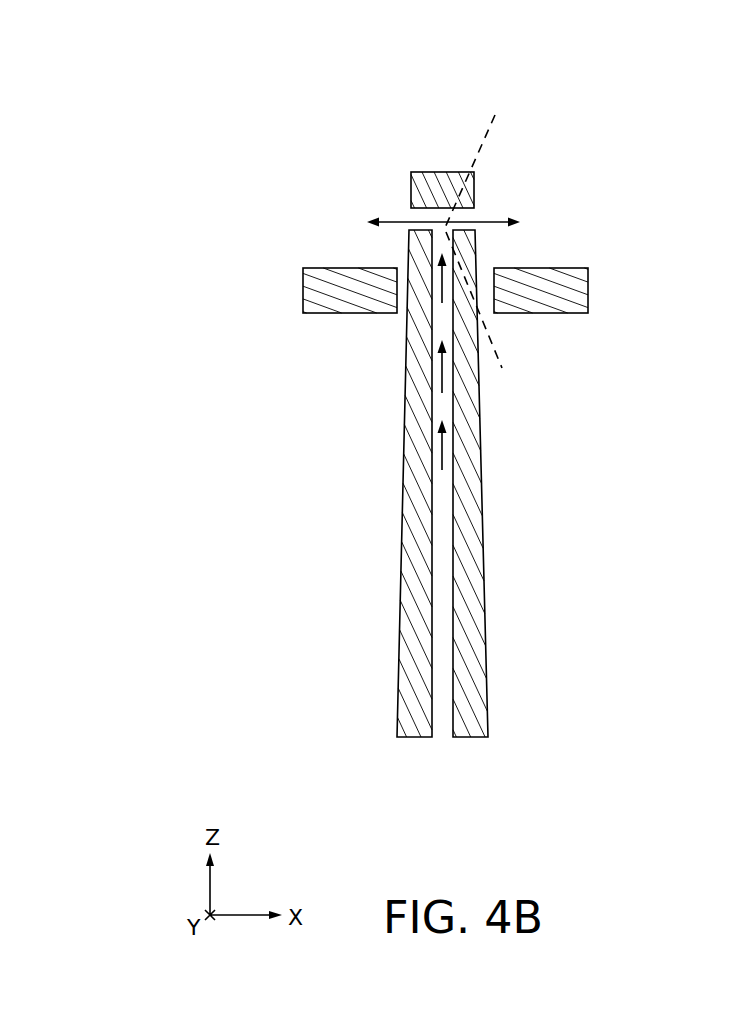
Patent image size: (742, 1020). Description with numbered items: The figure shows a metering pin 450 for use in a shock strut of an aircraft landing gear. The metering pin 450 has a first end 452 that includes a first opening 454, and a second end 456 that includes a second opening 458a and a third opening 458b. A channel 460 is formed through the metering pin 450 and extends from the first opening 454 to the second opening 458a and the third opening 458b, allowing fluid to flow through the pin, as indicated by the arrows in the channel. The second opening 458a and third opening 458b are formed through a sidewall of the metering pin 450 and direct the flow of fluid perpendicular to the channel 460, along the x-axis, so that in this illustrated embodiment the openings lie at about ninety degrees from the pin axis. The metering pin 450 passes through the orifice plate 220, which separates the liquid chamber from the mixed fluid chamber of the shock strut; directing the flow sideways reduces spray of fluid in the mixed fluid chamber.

The metering pin 450 is at (312, 117).
The first end 452 is at (408, 725).
The first opening 454 is at (441, 760).
The second end 456 is at (457, 188).
The second opening 458a is at (368, 203).
The third opening 458b is at (588, 202).
The channel 460 is at (445, 528).
The orifice plate 220 is at (333, 280).